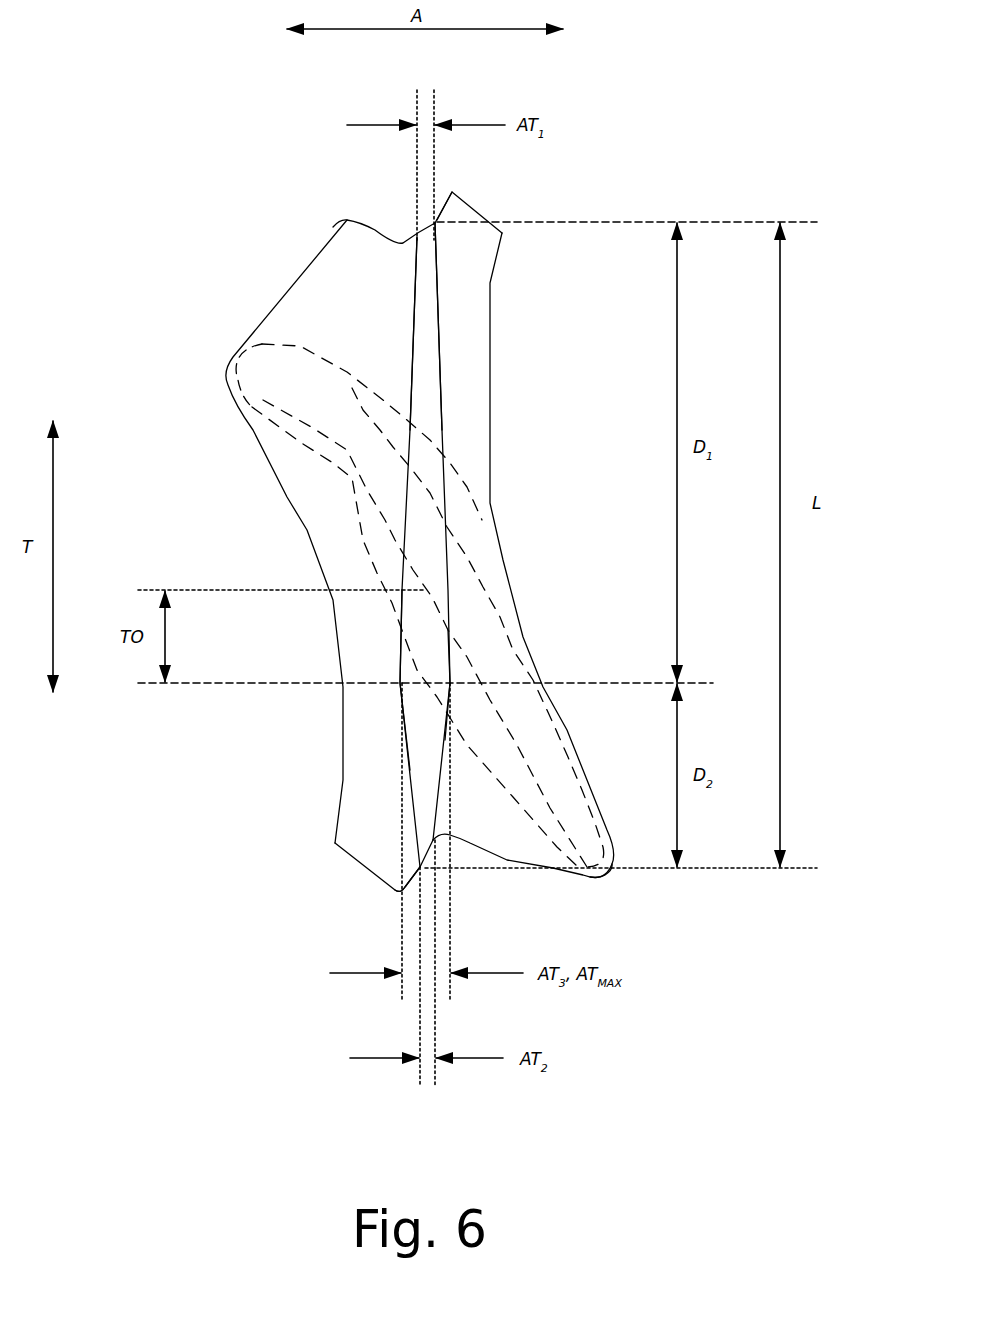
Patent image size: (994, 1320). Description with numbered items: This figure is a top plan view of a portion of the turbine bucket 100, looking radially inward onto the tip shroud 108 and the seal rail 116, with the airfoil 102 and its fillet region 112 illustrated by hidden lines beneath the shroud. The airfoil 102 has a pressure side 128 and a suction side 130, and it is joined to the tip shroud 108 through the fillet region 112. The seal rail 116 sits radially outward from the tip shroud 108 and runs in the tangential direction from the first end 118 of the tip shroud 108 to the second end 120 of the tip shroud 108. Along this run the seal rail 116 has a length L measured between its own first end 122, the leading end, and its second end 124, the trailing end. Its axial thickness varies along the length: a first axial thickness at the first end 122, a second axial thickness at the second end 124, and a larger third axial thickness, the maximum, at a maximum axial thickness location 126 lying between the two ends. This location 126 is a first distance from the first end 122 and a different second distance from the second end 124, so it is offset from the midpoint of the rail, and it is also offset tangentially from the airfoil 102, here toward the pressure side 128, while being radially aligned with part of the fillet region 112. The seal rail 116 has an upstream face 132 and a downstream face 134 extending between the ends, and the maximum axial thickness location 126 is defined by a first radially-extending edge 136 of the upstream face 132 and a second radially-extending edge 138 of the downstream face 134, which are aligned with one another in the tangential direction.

The turbine bucket 100 is at (173, 183).
The airfoil 102 is at (340, 440).
The tip shroud 108 is at (467, 420).
The fillet region 112 is at (470, 520).
The seal rail 116 is at (433, 377).
The first end of the tip shroud 118 is at (463, 180).
The second end of the tip shroud 120 is at (382, 912).
The first end of the seal rail 122 is at (448, 217).
The second end of the seal rail 124 is at (395, 888).
The maximum axial thickness location 126 is at (388, 688).
The pressure side 128 is at (363, 510).
The suction side 130 is at (472, 570).
The upstream face 132 is at (412, 323).
The downstream face 134 is at (440, 333).
The first radially-extending edge 136 is at (398, 683).
The second radially-extending edge 138 is at (453, 683).